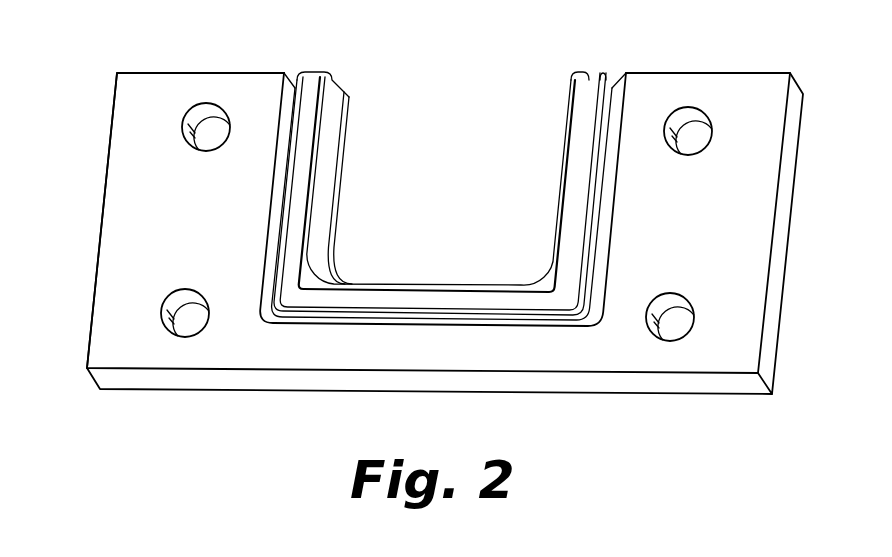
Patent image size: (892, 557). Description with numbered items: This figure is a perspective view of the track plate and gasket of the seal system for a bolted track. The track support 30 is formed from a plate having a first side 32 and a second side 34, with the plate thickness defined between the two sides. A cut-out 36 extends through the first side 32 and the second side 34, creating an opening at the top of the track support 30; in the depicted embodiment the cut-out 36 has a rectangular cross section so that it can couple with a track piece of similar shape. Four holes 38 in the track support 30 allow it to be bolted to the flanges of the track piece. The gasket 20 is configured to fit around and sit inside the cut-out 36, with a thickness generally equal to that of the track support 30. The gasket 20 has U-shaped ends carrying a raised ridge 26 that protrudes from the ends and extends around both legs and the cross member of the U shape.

The gasket 20 is at (592, 76).
The raised ridge 26 is at (313, 83).
The track support 30 is at (743, 100).
The first side 32 is at (145, 97).
The second side 34 is at (145, 390).
The cut-out 36 is at (328, 329).
The holes 38 is at (205, 117).